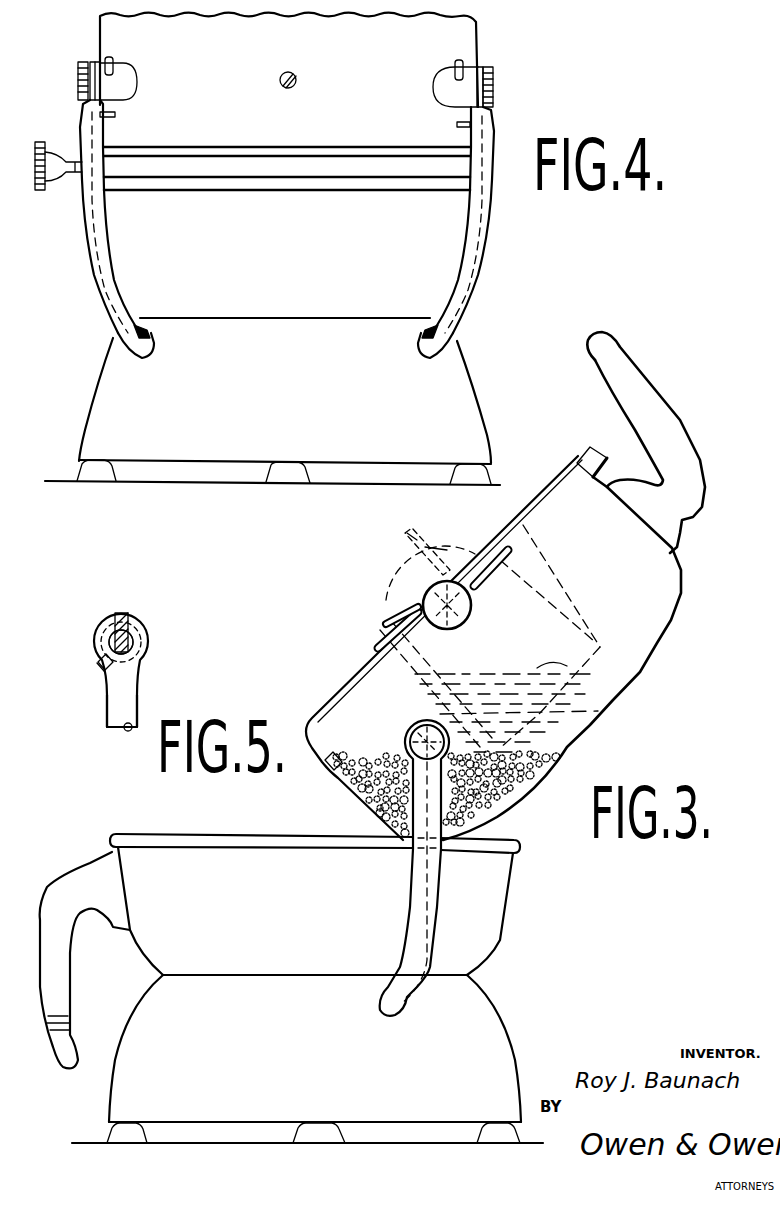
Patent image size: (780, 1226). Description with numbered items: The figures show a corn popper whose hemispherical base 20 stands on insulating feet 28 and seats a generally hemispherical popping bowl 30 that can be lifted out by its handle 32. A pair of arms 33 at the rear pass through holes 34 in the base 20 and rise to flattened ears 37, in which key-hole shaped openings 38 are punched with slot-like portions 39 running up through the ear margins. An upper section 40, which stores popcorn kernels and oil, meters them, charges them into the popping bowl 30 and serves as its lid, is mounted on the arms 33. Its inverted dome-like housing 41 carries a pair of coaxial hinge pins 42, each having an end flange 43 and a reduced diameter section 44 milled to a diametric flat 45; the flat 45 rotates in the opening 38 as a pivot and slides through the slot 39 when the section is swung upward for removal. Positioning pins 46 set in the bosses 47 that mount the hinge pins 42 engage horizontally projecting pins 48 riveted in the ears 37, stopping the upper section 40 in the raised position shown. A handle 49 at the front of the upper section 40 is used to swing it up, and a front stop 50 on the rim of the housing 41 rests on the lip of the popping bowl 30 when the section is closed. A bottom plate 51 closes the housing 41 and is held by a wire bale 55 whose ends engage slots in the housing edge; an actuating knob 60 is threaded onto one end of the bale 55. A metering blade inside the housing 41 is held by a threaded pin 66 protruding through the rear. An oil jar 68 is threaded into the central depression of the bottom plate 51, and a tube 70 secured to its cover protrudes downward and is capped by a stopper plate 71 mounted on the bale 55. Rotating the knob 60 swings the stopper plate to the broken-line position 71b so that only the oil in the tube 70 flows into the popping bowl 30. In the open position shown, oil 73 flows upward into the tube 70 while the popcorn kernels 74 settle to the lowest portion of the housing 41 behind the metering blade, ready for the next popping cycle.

In FIG. 4, the hemispherical base 20 is at (485, 412).
In FIG. 3, the hemispherical base 20 is at (508, 1035).
In FIG. 4, the insulating feet 28 is at (490, 475).
In FIG. 3, the insulating feet 28 is at (480, 1138).
In FIG. 3, the popping bowl 30 is at (495, 950).
In FIG. 3, the handle 32 is at (70, 965).
In FIG. 4, the arms 33 is at (88, 275).
In FIG. 3, the arms 33 is at (442, 915).
In FIG. 5, the arms 33 is at (107, 712).
In FIG. 4, the holes 34 is at (125, 347).
In FIG. 4, the ears 37 is at (83, 105).
In FIG. 5, the ears 37 is at (148, 668).
In FIG. 3, the key-hole shaped openings 38 is at (450, 742).
In FIG. 5, the key-hole shaped openings 38 is at (140, 644).
In FIG. 5, the slot-like portions 39 is at (130, 616).
In FIG. 4, the upper section 40 is at (337, 60).
In FIG. 3, the upper section 40 is at (517, 586).
In FIG. 4, the inverted dome-like housing 41 is at (478, 40).
In FIG. 3, the inverted dome-like housing 41 is at (680, 577).
In FIG. 4, the hinge pins 42 is at (80, 62).
In FIG. 4, the flange 43 is at (78, 82).
In FIG. 5, the reduced diameter section 44 is at (133, 636).
In FIG. 5, the diametric flat 45 is at (95, 633).
In FIG. 4, the positioning pins 46 is at (112, 58).
In FIG. 5, the positioning pins 46 is at (97, 660).
In FIG. 4, the bosses 47 is at (128, 85).
In FIG. 4, the horizontally projecting pins 48 is at (115, 115).
In FIG. 3, the horizontally projecting pins 48 is at (338, 775).
In FIG. 5, the horizontally projecting pins 48 is at (103, 668).
In FIG. 3, the handle 49 is at (688, 430).
In FIG. 3, the front stop 50 is at (588, 448).
In FIG. 3, the bottom plate 51 is at (553, 517).
In FIG. 3, the wire bale 55 is at (388, 612).
In FIG. 4, the actuating knob 60 is at (40, 190).
In FIG. 4, the threaded pin 66 is at (297, 78).
In FIG. 3, the oil jar 68 is at (600, 622).
In FIG. 3, the tube 70 is at (590, 725).
In FIG. 3, the stopper plate 71 is at (383, 640).
In FIG. 3, the stopper plate broken-line position 71b is at (420, 530).
In FIG. 3, the oil 73 is at (615, 693).
In FIG. 3, the popcorn kernels 74 is at (505, 805).